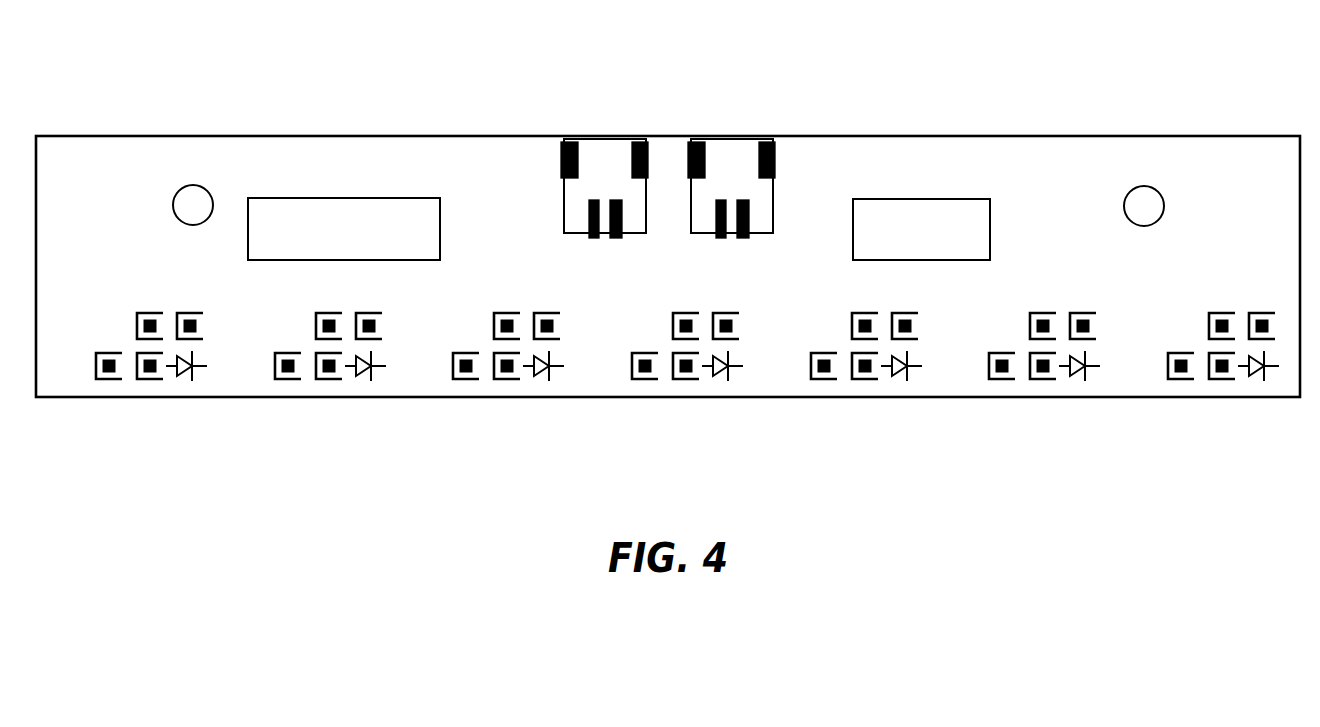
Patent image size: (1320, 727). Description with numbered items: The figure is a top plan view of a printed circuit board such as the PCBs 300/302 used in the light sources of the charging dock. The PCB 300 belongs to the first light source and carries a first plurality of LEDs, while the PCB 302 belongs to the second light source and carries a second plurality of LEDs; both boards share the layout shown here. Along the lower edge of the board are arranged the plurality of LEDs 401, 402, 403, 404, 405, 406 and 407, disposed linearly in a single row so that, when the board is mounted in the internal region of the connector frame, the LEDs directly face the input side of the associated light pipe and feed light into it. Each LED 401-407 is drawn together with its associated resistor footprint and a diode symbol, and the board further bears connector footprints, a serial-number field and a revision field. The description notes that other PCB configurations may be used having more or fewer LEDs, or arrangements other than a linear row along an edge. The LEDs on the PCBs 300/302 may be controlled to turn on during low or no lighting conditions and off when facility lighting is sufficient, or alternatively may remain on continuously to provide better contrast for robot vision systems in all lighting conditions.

The printed circuit board 300 is at (352, 90).
The printed circuit board 302 is at (668, 266).
The light emitting diode 401 is at (1195, 390).
The light emitting diode 402 is at (1016, 390).
The light emitting diode 403 is at (838, 390).
The light emitting diode 404 is at (659, 390).
The light emitting diode 405 is at (480, 390).
The light emitting diode 406 is at (302, 390).
The light emitting diode 407 is at (123, 390).